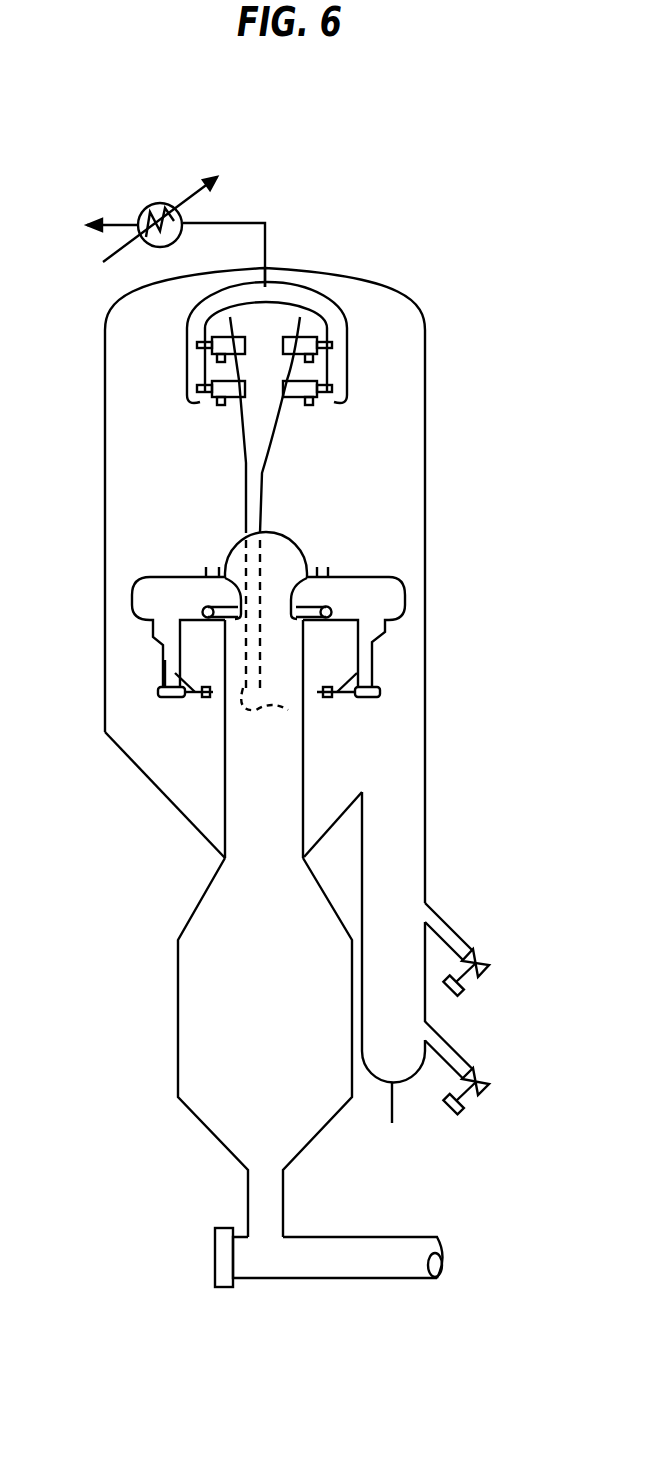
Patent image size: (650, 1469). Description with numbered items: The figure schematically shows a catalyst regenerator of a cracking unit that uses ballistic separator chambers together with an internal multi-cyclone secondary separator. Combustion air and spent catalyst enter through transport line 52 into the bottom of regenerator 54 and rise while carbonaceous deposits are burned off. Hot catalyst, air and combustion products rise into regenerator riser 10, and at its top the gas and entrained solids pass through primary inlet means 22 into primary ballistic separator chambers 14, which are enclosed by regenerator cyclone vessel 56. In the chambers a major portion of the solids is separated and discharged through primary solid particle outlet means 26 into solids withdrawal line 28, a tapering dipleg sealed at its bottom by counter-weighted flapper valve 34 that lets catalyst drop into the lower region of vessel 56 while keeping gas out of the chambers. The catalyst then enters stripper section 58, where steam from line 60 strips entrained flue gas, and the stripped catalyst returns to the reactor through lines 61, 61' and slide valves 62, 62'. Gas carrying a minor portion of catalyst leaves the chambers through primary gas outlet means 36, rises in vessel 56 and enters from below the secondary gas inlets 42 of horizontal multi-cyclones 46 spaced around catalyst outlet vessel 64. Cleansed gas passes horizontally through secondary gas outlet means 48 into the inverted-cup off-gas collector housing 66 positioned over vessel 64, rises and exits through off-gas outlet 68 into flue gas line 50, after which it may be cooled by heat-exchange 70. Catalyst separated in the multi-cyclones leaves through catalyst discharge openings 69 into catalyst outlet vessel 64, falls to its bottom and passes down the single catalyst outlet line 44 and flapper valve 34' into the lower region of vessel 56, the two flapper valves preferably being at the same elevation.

The regenerator riser 10 is at (243, 827).
The primary ballistic separator chamber 14 is at (367, 574).
The primary inlet means 22 is at (347, 605).
The primary solid particle outlet means 26 is at (153, 628).
The solids withdrawal line 28 is at (163, 662).
The counter-weighted flapper valve 34 is at (124, 740).
The flapper valve 34' is at (372, 645).
The primary gas outlet means 36 is at (323, 563).
The secondary gas inlet 42 is at (307, 405).
The catalyst outlet line 44 is at (265, 487).
The horizontal multi-cyclone 46 is at (330, 397).
The secondary gas outlet means 48 is at (327, 330).
The flue gas line 50 is at (268, 237).
The transport line 52 is at (317, 1280).
The regenerator 54 is at (178, 1030).
The regenerator cyclone vessel 56 is at (105, 537).
The stripper section 58 is at (360, 885).
The steam line 60 is at (393, 1108).
The catalyst return line 61 is at (487, 1039).
The catalyst return line 61' is at (490, 920).
The slide valve 62 is at (496, 1077).
The slide valve 62' is at (499, 958).
The catalyst outlet vessel 64 is at (262, 390).
The off-gas collector housing 66 is at (347, 370).
The off-gas outlet 68 is at (270, 278).
The catalyst discharge opening 69 is at (247, 343).
The heat-exchange 70 is at (155, 202).